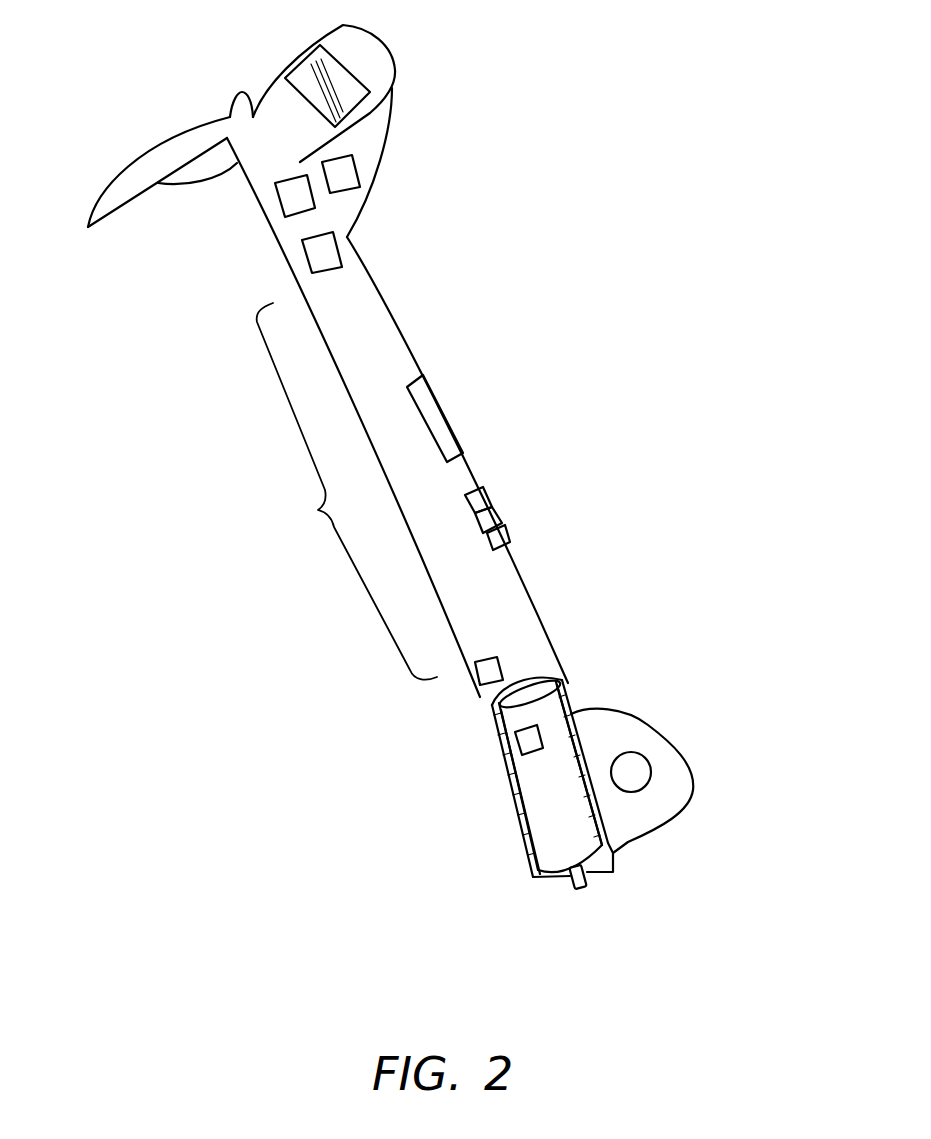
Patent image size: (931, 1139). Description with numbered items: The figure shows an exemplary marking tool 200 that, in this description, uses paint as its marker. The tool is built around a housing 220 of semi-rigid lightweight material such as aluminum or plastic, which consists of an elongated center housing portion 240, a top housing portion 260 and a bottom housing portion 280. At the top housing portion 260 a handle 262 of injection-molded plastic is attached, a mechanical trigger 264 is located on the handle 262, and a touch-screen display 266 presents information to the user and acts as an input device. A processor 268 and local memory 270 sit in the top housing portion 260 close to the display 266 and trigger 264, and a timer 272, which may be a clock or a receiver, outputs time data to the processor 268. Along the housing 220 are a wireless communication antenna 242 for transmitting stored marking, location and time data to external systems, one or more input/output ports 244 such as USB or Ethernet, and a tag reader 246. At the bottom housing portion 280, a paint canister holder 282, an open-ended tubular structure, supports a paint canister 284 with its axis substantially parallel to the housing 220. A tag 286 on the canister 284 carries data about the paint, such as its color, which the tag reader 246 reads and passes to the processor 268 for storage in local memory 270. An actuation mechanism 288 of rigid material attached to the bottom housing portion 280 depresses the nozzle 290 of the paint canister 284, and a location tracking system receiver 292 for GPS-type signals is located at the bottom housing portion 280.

The marking tool 200 is at (536, 113).
The housing 220 is at (383, 284).
The elongated center housing portion 240 is at (318, 510).
The wireless communication antenna 242 is at (437, 398).
The input/output ports 244 is at (493, 478).
The tag reader 246 is at (478, 690).
The top housing portion 260 is at (200, 75).
The handle 262 is at (145, 138).
The mechanical trigger 264 is at (197, 190).
The display 266 is at (310, 62).
The processor 268 is at (360, 167).
The local memory 270 is at (278, 200).
The timer 272 is at (307, 258).
The bottom housing portion 280 is at (670, 829).
The paint canister holder 282 is at (537, 677).
The paint canister 284 is at (556, 806).
The tag 286 is at (517, 747).
The actuation mechanism 288 is at (617, 873).
The nozzle 290 is at (580, 890).
The location tracking system receiver 292 is at (647, 753).